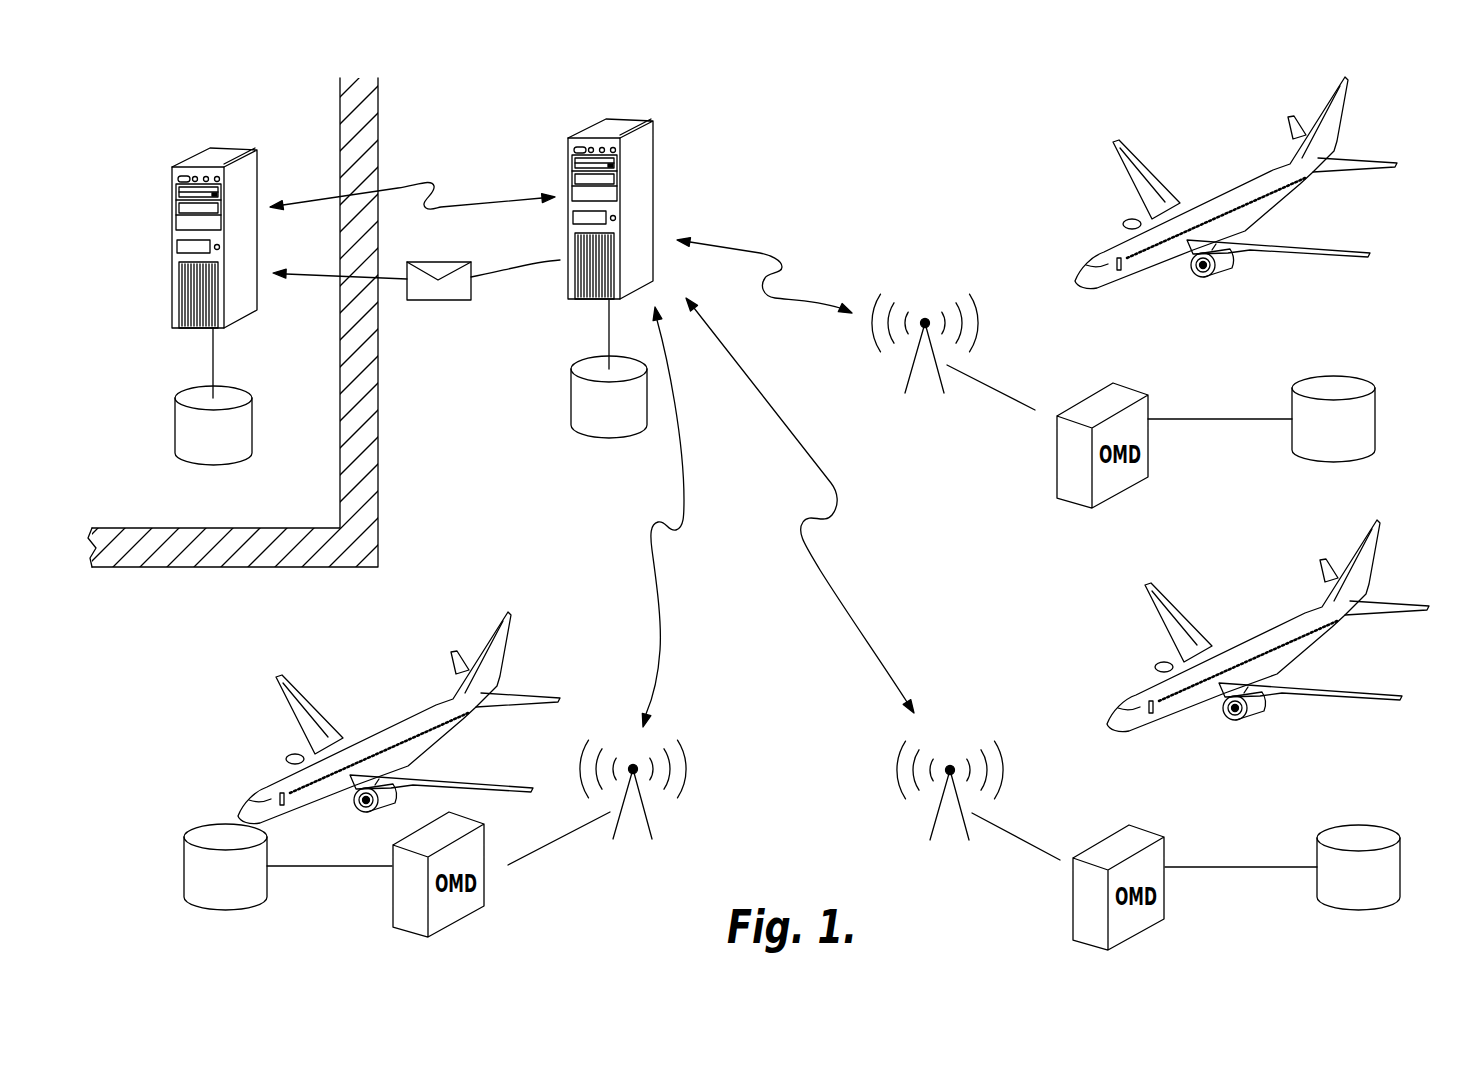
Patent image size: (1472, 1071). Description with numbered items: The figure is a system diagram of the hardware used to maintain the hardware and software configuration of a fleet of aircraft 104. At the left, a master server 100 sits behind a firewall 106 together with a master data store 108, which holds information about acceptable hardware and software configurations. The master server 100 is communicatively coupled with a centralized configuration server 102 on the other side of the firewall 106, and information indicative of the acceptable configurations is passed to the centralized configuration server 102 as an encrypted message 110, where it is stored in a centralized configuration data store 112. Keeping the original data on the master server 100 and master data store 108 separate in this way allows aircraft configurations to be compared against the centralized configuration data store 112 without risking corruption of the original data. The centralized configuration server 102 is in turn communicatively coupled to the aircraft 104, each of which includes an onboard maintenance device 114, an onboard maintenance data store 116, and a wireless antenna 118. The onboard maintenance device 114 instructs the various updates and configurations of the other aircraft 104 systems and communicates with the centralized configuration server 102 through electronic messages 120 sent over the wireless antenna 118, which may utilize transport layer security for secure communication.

The master server 100 is at (198, 158).
The centralized configuration server 102 is at (633, 123).
The aircraft 104 is at (1242, 183).
The firewall 106 is at (373, 133).
The master data store 108 is at (178, 422).
The encrypted message 110 is at (434, 184).
The centralized configuration data store 112 is at (578, 409).
The onboard maintenance device 114 is at (1132, 395).
The onboard maintenance data store 116 is at (1360, 385).
The wireless antenna 118 is at (918, 375).
The electronic messages 120 is at (433, 298).